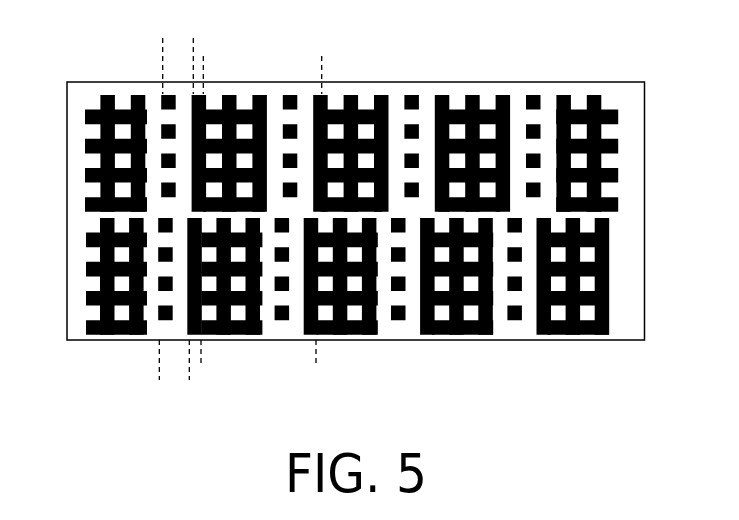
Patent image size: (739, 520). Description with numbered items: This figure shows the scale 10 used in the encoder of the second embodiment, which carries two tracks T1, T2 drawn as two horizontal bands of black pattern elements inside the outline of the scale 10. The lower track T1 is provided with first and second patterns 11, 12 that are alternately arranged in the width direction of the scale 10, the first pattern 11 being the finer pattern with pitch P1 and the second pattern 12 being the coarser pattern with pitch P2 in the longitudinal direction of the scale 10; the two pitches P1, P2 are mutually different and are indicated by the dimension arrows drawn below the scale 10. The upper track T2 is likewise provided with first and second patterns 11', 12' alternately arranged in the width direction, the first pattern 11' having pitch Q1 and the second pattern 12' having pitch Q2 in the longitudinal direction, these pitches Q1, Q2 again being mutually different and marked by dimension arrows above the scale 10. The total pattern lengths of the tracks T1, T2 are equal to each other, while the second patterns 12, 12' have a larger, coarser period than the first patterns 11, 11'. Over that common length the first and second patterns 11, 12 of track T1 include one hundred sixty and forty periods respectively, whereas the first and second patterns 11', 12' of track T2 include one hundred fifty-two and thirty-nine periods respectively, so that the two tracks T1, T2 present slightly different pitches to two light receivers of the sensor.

The scale 10 is at (645, 210).
The first pattern 11 is at (314, 276).
The second pattern 12 is at (313, 284).
The first pattern 11' is at (308, 153).
The second pattern 12' is at (316, 161).
The track T1 is at (357, 276).
The track T2 is at (356, 153).
The pitch P1 is at (160, 373).
The pitch P2 is at (315, 360).
The pitch Q1 is at (164, 53).
The pitch Q2 is at (321, 63).